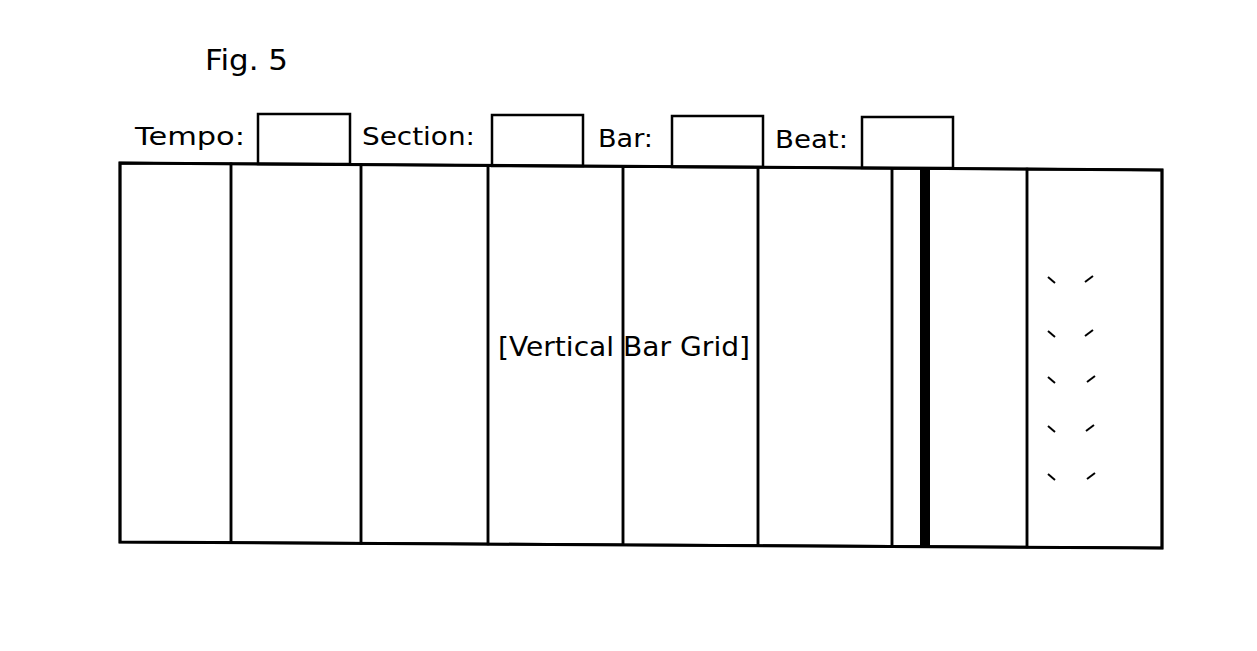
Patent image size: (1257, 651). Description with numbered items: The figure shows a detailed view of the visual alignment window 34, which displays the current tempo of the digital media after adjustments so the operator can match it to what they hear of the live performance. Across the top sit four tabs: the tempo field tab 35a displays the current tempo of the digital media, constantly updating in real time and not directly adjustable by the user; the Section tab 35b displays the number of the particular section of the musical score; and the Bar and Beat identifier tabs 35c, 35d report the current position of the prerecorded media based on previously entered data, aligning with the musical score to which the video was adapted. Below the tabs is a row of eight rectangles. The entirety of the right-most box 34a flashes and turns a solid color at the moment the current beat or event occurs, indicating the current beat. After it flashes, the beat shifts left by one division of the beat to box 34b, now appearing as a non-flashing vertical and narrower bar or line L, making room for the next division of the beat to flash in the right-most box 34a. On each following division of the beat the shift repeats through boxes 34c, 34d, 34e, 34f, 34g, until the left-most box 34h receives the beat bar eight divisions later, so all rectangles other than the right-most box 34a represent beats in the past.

The visual alignment window 34 is at (641, 291).
The right-most box 34a is at (1142, 403).
The box 34b is at (960, 546).
The box 34c is at (828, 546).
The box 34d is at (698, 545).
The box 34e is at (567, 544).
The box 34f is at (438, 544).
The box 34g is at (312, 543).
The left-most box 34h is at (190, 545).
The tempo field tab 35a is at (330, 113).
The Section tab 35b is at (548, 114).
The Bar identifier tab 35c is at (727, 115).
The Beat identifier tab 35d is at (902, 116).
The line L is at (930, 343).